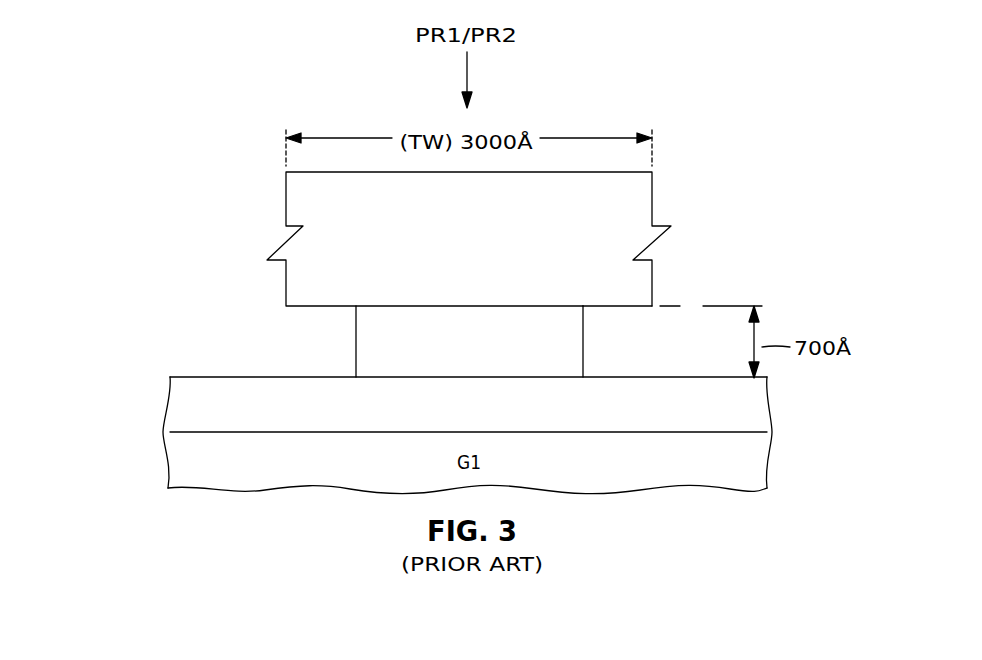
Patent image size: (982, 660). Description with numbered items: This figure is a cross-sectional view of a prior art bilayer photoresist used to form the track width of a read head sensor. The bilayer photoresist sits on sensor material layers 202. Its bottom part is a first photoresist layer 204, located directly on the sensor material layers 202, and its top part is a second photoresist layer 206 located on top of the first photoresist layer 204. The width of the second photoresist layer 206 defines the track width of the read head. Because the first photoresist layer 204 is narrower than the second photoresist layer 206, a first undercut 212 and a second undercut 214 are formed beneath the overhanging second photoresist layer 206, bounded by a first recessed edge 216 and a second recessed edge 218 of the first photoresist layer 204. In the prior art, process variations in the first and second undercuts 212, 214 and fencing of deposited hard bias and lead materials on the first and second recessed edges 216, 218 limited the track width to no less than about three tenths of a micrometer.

The sensor material layers 202 is at (649, 378).
The first photoresist layer 204 is at (372, 332).
The second photoresist layer 206 is at (297, 196).
The first undercut 212 is at (264, 341).
The second undercut 214 is at (637, 331).
The first recessed edge 216 is at (356, 353).
The second recessed edge 218 is at (583, 352).